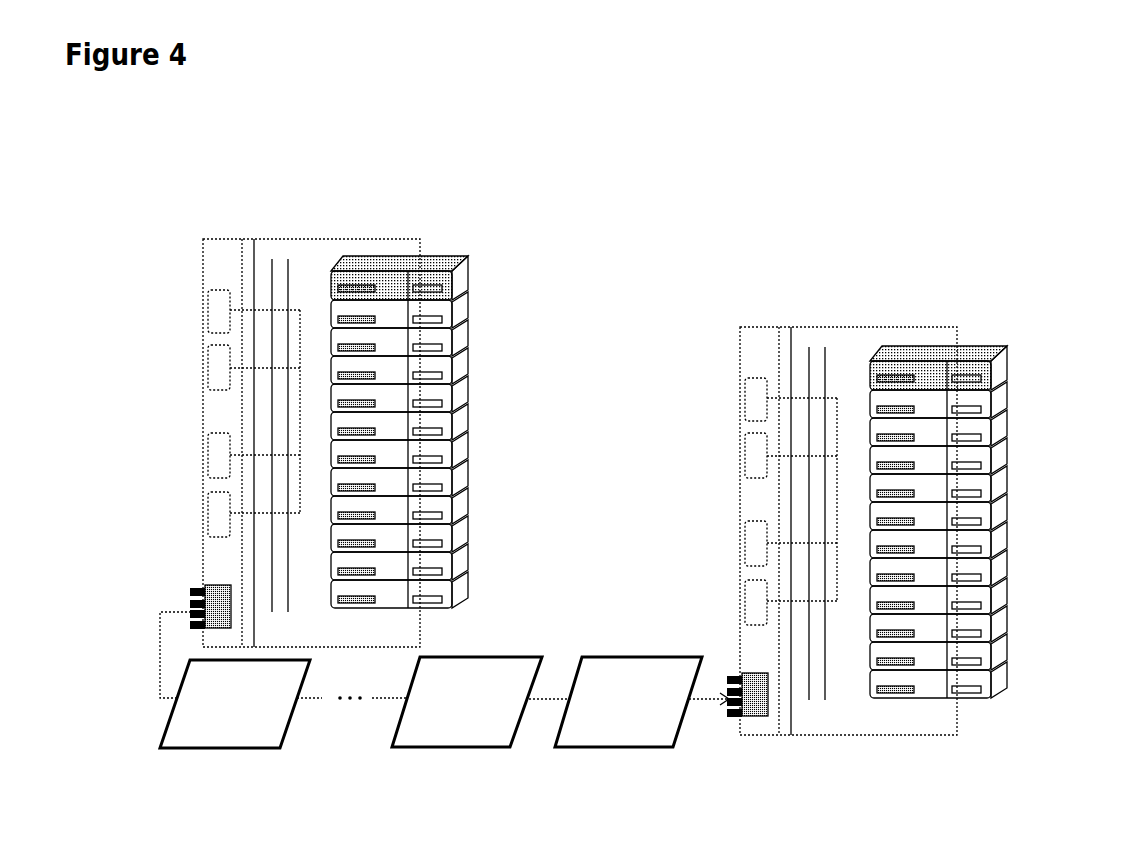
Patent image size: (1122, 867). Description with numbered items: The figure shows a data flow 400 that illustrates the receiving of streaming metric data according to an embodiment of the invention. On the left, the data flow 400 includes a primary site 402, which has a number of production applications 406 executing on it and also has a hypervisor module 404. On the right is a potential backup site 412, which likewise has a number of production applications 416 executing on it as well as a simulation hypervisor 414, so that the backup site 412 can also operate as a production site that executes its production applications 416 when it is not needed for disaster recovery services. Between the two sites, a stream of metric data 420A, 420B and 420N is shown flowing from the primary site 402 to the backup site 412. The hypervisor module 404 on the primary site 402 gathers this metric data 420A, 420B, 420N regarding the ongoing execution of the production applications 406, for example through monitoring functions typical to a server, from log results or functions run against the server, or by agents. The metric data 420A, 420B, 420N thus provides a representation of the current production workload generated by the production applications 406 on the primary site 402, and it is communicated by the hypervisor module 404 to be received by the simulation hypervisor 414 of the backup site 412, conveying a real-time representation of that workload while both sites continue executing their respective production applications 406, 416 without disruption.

The data flow 400 is at (912, 113).
The primary site 402 is at (313, 240).
The hypervisor module 404 is at (392, 257).
The production applications 406 is at (480, 293).
The backup site 412 is at (855, 327).
The simulation hypervisor 414 is at (932, 343).
The production applications 416 is at (1020, 380).
The metric data 420N is at (222, 750).
The metric data 420B is at (452, 748).
The metric data 420A is at (610, 748).